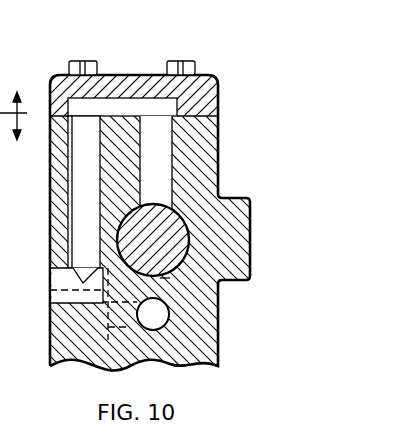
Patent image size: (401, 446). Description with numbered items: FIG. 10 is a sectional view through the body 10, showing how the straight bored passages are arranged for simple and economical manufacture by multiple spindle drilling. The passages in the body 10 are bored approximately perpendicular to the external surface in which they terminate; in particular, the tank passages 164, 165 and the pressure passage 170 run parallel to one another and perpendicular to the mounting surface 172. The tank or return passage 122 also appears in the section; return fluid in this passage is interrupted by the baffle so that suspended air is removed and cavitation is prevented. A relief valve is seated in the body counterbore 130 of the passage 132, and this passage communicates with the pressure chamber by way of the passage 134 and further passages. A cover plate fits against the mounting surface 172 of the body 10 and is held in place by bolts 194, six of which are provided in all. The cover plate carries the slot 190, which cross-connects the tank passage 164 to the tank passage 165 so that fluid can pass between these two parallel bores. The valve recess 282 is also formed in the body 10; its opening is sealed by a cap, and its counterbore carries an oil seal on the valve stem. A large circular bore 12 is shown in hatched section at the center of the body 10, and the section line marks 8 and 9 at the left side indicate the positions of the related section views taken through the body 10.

The body 10 is at (200, 223).
The cylindrical chamber 12 is at (151, 240).
The piston member 122 is at (60, 298).
The lower body portion 130 is at (77, 332).
The passage 132 is at (122, 326).
The port 134 is at (168, 320).
The slot 164 is at (168, 154).
The bore 165 is at (92, 188).
The recess 170 is at (166, 284).
The cover plate 172 is at (205, 112).
The seal plate 190 is at (122, 108).
The fasteners 194 is at (96, 64).
The wall portion 282 is at (184, 220).
The section line 8- 8 is at (15, 141).
The section line 9- 9 is at (13, 89).